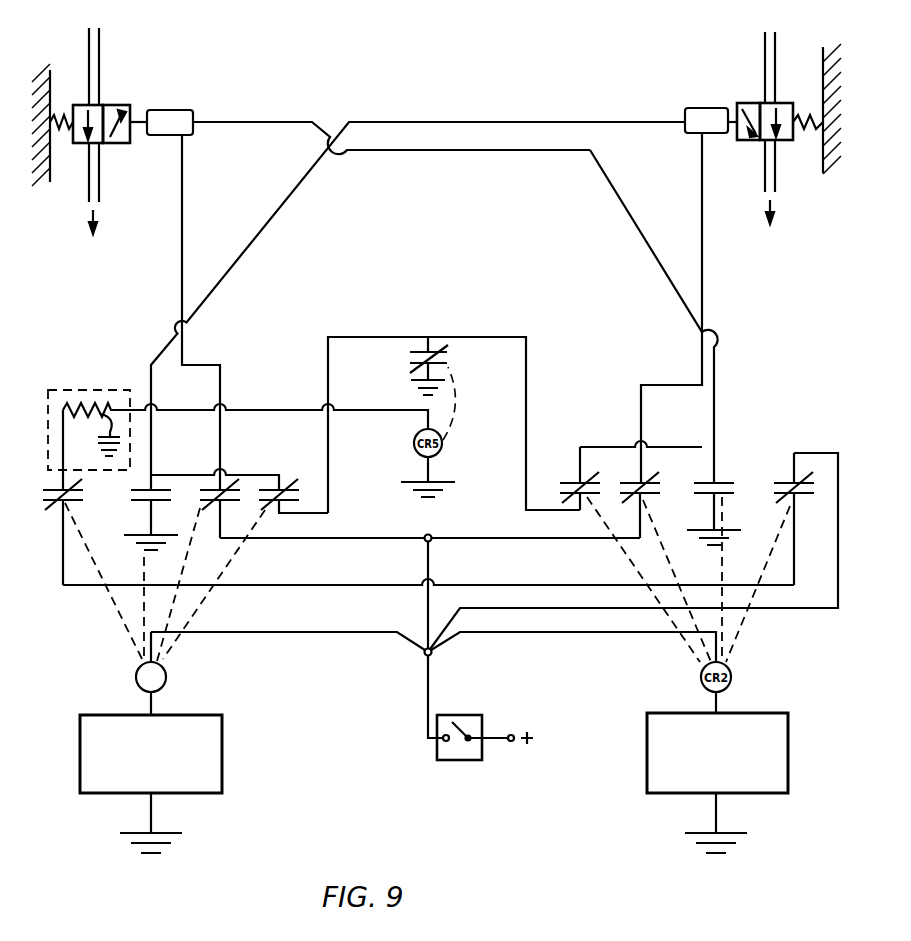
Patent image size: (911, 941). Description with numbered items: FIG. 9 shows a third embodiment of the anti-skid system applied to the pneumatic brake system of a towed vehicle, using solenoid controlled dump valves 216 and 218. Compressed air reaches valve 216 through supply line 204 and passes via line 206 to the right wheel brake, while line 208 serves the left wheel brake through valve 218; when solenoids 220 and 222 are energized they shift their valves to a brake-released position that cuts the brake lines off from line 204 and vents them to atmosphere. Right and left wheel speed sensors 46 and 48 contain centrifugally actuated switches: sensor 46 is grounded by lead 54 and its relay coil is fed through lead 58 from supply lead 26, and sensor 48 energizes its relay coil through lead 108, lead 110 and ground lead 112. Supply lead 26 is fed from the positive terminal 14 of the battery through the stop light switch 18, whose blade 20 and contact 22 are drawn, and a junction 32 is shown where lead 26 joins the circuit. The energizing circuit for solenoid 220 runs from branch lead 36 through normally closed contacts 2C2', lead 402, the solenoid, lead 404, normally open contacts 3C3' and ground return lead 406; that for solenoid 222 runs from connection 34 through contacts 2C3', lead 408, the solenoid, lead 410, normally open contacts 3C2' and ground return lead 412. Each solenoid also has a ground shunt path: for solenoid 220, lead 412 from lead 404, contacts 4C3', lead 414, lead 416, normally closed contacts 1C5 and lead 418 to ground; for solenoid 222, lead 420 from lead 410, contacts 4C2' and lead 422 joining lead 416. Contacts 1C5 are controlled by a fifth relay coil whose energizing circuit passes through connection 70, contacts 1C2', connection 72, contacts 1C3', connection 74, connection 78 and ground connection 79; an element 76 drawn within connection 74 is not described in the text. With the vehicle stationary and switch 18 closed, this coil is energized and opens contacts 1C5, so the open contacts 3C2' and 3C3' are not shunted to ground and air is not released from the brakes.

The supply line 204 is at (100, 50).
The line 206 is at (778, 188).
The compressed air line 208 is at (88, 180).
The solenoid controlled dump valve 216 is at (793, 140).
The solenoid controlled dump valve 218 is at (113, 145).
The solenoid 220 is at (685, 110).
The solenoid 222 is at (192, 111).
The lead 402 is at (703, 302).
The lead 404 is at (280, 208).
The lead 410 is at (453, 150).
The connection 74 is at (89, 415).
The compensating element 76 is at (99, 443).
The connection 78 is at (181, 410).
The lead 412 is at (177, 475).
The lead 408 is at (221, 440).
The lead 414 is at (328, 463).
The lead 416 is at (413, 352).
The lead 418 is at (412, 377).
The contacts 1C5 is at (433, 388).
The connection 79 is at (430, 470).
The lead 422 is at (527, 410).
The lead 420 is at (664, 446).
The contacts 1C3' is at (45, 497).
The contacts 3C3' is at (128, 510).
The contacts 2C3' is at (201, 506).
The contacts 4C3' is at (293, 480).
The ground return lead 406 is at (143, 520).
The contacts 4C2' is at (566, 478).
The contacts 2C2' is at (659, 494).
The contacts 3C2' is at (732, 470).
The contacts 1C2' is at (804, 504).
The connection 34 is at (330, 538).
The branch lead 36 is at (502, 538).
The junction 32 is at (432, 542).
The connection 72 is at (530, 585).
The connection 70 is at (650, 609).
The lead 108 is at (285, 634).
The lead 58 is at (563, 633).
The supply lead 26 is at (428, 688).
The lead 110 is at (152, 704).
The left wheel speed sensor 48 is at (80, 760).
The lead 112 is at (152, 820).
The stop light switch 18 is at (467, 744).
The switch contact 22 is at (444, 741).
The switch blade 20 is at (467, 740).
The positive terminal 14 is at (511, 742).
The right wheel speed sensor 46 is at (788, 758).
The lead 54 is at (717, 822).